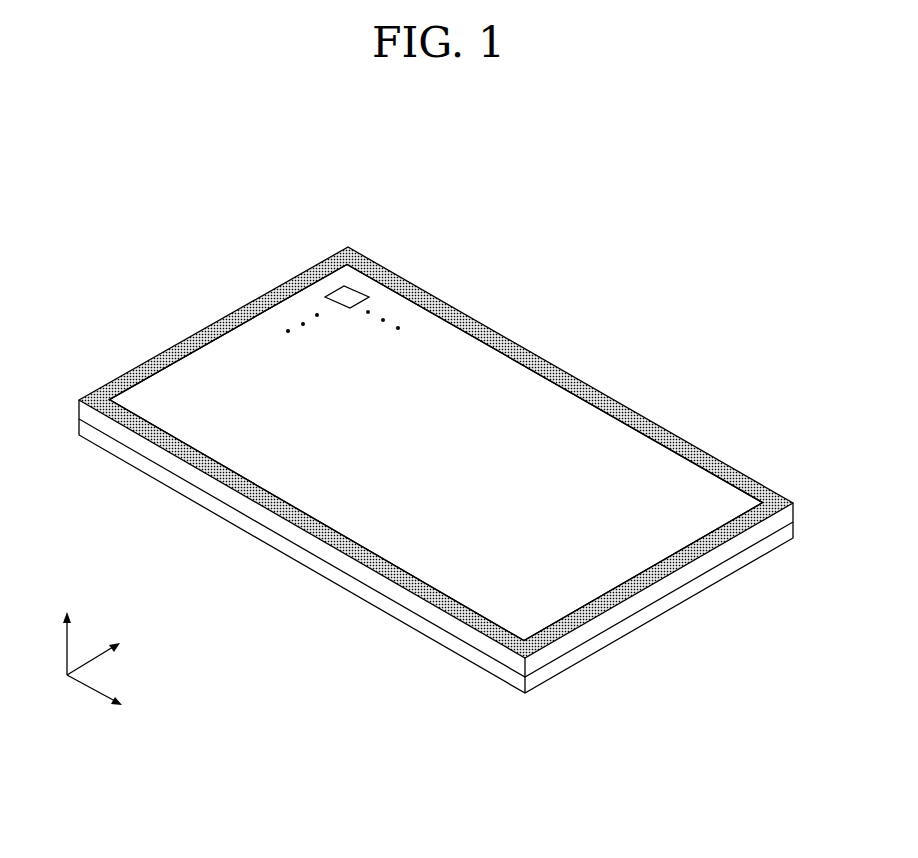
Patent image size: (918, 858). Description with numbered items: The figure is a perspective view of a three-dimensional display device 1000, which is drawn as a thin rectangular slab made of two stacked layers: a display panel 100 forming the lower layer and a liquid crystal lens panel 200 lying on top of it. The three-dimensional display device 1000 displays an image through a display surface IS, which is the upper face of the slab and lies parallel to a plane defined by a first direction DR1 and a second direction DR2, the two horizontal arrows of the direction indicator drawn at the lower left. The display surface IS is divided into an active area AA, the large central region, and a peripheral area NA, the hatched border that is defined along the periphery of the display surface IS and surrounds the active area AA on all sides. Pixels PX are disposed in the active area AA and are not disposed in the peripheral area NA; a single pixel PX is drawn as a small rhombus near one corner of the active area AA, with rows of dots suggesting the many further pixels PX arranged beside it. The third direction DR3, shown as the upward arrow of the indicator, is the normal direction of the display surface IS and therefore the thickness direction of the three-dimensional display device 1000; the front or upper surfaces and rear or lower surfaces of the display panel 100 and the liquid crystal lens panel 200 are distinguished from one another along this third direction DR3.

The three-dimensional display device 1000 is at (436, 441).
The liquid crystal lens panel 200 is at (436, 436).
The display panel 100 is at (660, 603).
The display surface IS is at (436, 439).
The peripheral area NA is at (447, 305).
The active area AA is at (480, 377).
The pixel PX is at (350, 286).
The first direction DR1 is at (116, 697).
The second direction DR2 is at (116, 654).
The third direction DR3 is at (67, 631).